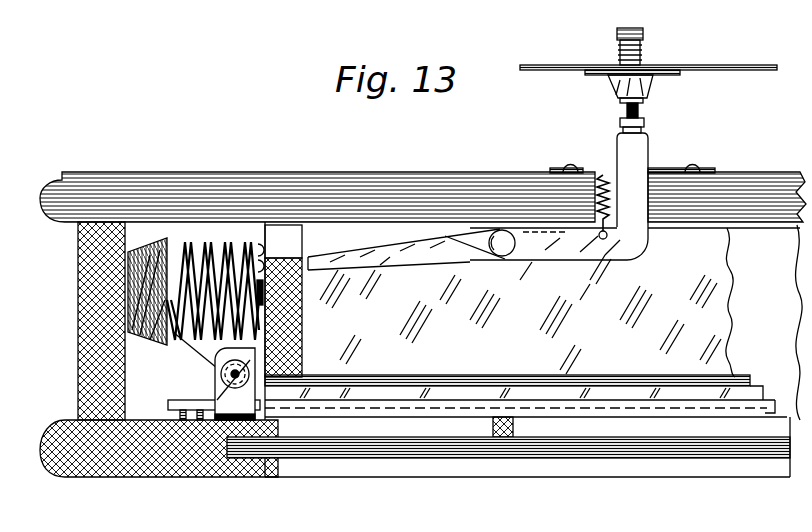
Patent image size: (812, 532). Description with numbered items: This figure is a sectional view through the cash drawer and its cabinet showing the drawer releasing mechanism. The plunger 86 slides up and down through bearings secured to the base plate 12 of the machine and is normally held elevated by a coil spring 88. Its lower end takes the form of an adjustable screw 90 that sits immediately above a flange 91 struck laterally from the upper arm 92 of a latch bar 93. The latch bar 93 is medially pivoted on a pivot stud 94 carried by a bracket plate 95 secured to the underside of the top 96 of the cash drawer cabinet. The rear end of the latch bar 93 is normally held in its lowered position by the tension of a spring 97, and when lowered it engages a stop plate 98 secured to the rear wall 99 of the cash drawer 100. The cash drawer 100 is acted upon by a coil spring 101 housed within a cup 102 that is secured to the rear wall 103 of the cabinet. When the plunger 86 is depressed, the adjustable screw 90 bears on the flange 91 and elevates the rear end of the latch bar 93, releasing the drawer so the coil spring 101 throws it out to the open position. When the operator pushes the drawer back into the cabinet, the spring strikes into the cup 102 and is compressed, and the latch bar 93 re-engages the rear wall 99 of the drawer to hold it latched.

The base plate 12 is at (537, 65).
The plunger 86 is at (645, 36).
The coil spring 88 is at (645, 52).
The adjustable screw 90 is at (640, 117).
The flange 91 is at (617, 133).
The upper arm 92 is at (640, 153).
The latch bar 93 is at (557, 257).
The pivot stud 94 is at (503, 257).
The bracket plate 95 is at (460, 235).
The top 96 is at (440, 178).
The spring 97 is at (614, 170).
The stop plate 98 is at (310, 275).
The rear wall 99 is at (300, 347).
The cash drawer 100 is at (520, 314).
The coil spring 101 is at (217, 250).
The cup 102 is at (158, 250).
The rear wall 103 is at (93, 278).